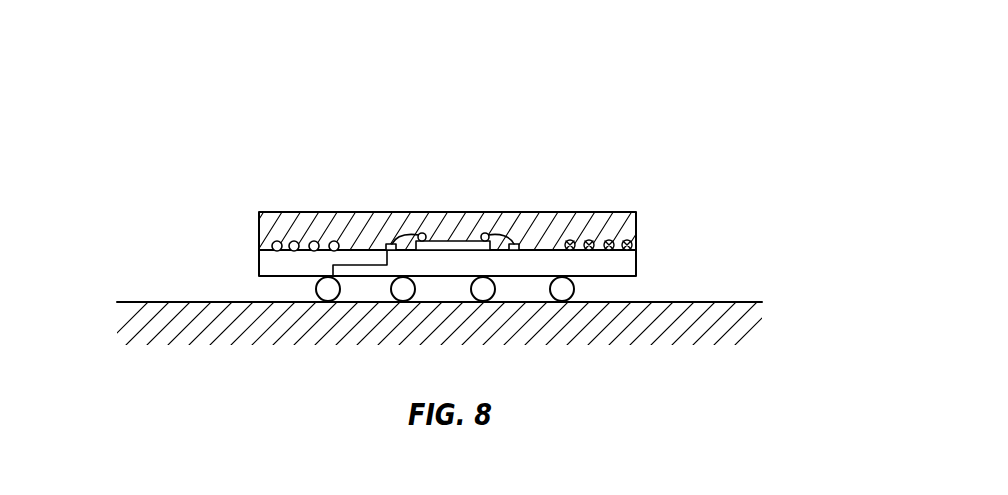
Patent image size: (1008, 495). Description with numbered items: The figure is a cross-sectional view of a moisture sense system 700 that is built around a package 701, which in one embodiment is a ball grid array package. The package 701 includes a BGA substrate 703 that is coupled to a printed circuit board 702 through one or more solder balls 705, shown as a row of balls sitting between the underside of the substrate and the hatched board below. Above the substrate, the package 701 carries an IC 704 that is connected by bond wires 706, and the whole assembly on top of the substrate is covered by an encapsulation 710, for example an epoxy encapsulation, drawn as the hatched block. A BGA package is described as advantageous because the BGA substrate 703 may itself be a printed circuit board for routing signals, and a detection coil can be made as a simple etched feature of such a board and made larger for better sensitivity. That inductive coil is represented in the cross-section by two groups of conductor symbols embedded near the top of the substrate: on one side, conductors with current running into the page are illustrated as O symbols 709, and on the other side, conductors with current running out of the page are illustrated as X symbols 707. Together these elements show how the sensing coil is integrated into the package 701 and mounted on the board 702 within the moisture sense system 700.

The moisture sense system 700 is at (634, 66).
The package 701 is at (308, 211).
The printed circuit board 702 is at (113, 323).
The BGA substrate 703 is at (258, 262).
The IC 704 is at (452, 241).
The solder balls 705 is at (326, 290).
The bond wires 706 is at (407, 234).
The conductors with current running out of the page 707 is at (636, 244).
The conductors with current running into the page 709 is at (277, 241).
The encapsulation 710 is at (605, 220).